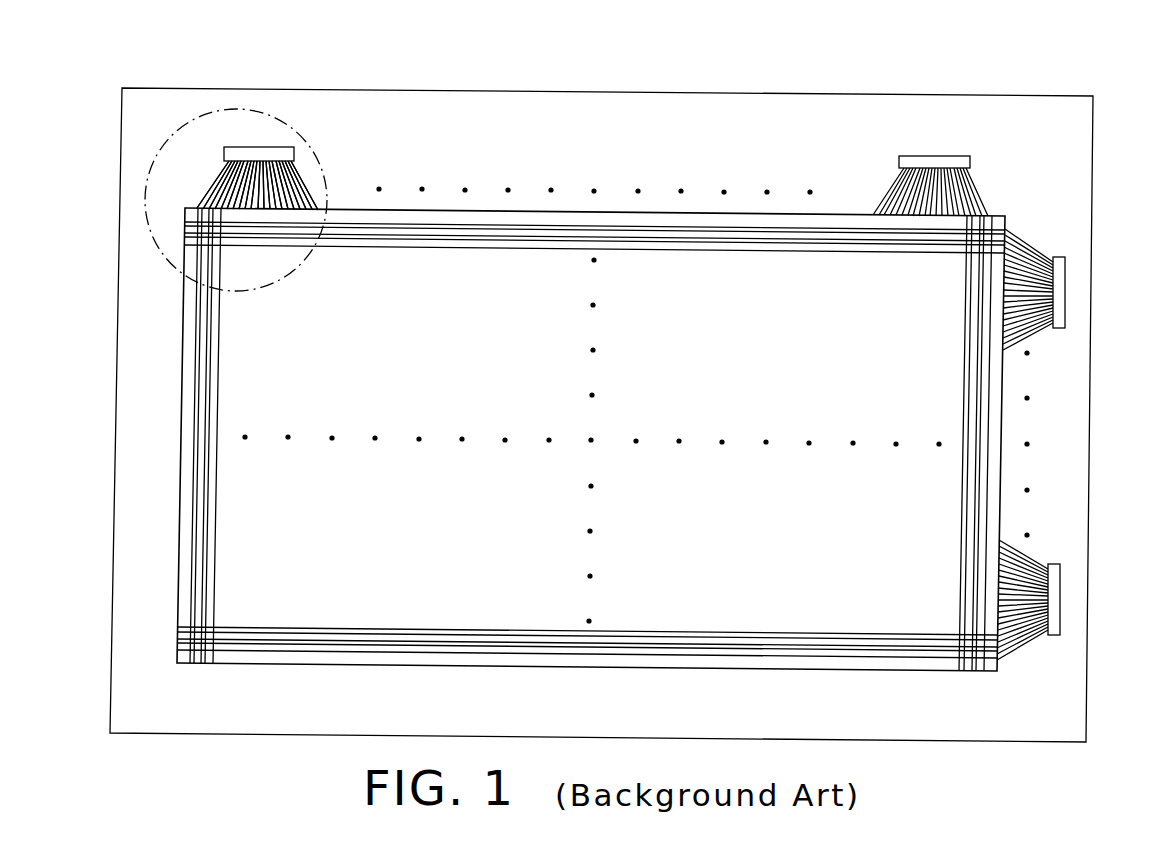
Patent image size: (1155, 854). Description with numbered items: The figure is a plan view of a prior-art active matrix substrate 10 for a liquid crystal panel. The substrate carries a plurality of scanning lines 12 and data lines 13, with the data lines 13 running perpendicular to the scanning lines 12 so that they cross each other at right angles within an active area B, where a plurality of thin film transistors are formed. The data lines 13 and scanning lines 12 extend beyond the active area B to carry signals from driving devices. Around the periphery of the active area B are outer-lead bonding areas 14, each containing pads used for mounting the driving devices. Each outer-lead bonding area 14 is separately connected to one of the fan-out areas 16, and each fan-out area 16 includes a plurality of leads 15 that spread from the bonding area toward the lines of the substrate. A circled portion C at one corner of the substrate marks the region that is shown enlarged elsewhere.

The active matrix substrate 10 is at (552, 90).
The scanning lines 12 is at (653, 227).
The data lines 13 is at (988, 451).
The outer-lead bonding (OLB) areas 14 is at (258, 157).
The leads 15 is at (303, 187).
The fan-out areas 16 is at (200, 162).
The active area B is at (724, 356).
The portion C is at (235, 200).